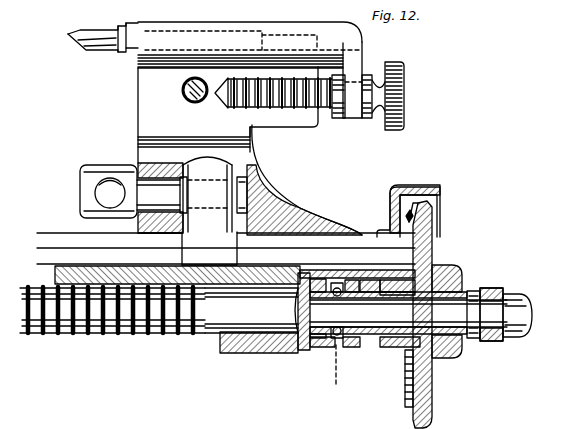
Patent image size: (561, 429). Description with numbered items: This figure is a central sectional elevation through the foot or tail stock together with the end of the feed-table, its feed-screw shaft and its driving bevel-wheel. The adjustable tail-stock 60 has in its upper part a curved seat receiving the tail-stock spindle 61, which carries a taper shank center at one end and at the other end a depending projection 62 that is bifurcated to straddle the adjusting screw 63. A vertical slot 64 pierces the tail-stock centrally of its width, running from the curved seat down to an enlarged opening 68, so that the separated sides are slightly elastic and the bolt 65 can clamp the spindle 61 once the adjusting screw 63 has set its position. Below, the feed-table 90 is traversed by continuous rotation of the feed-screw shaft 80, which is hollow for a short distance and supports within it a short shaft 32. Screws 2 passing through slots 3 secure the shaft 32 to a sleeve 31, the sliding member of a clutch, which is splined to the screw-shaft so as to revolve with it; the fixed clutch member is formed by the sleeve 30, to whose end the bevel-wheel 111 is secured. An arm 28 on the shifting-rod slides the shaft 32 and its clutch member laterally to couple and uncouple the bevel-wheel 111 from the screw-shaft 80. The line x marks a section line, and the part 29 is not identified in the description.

The tail-stock spindle 61 is at (249, 26).
The depending projection 62 is at (352, 66).
The adjusting screw 63 is at (401, 87).
The adjustable tail-stock 60 is at (306, 210).
The vertical slot 64 is at (279, 105).
The bolt 65 is at (190, 100).
The enlarged opening 68 is at (252, 141).
The feed-table 90 is at (108, 262).
The feed-screw shaft 80 is at (373, 362).
The short shaft 32 is at (408, 313).
The arm 28 is at (498, 289).
The flange 29 is at (457, 340).
The sleeve 31 is at (316, 342).
The screws 2 is at (334, 341).
The slots 3 is at (346, 341).
The sleeve 30 is at (391, 342).
The section line x is at (333, 373).
The bevel-wheel 111 is at (410, 413).